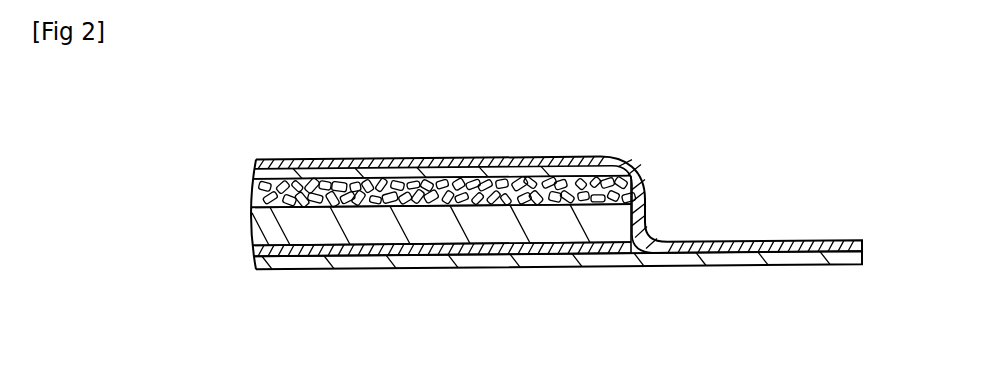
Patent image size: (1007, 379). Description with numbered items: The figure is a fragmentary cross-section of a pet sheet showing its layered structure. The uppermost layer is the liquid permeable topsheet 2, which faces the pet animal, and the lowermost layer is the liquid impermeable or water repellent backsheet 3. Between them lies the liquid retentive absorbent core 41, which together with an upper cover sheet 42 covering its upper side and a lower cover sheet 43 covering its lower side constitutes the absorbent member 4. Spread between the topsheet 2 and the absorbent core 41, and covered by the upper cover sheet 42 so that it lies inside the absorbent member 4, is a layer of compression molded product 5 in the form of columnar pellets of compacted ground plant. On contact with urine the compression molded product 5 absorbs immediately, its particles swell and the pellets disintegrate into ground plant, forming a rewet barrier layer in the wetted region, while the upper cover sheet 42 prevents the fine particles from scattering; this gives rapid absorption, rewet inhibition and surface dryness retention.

The topsheet 2 is at (378, 158).
The backsheet 3 is at (425, 262).
The absorbent member 4 is at (157, 163).
The compression molded product 5 is at (460, 195).
The absorbent core 41 is at (262, 224).
The upper cover sheet 42 is at (400, 139).
The lower cover sheet 43 is at (252, 250).